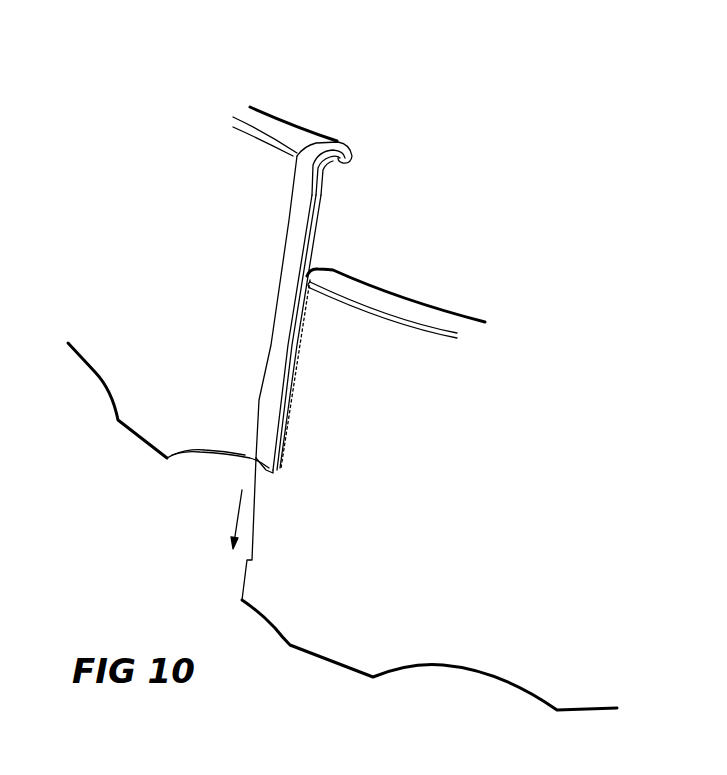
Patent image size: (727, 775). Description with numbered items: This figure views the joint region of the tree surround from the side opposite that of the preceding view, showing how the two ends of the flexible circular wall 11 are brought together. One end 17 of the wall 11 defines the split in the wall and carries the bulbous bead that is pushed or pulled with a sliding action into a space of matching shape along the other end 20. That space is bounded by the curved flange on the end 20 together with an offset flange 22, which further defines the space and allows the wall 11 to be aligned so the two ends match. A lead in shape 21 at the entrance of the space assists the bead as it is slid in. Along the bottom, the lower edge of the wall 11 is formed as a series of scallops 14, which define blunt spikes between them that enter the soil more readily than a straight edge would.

The circular wall 11 is at (411, 482).
The scallops 14 is at (94, 374).
The one end of the wall 17 is at (333, 282).
The other end of the wall 20 is at (320, 126).
The lead in shape 21 is at (245, 460).
The offset flange 22 is at (290, 242).